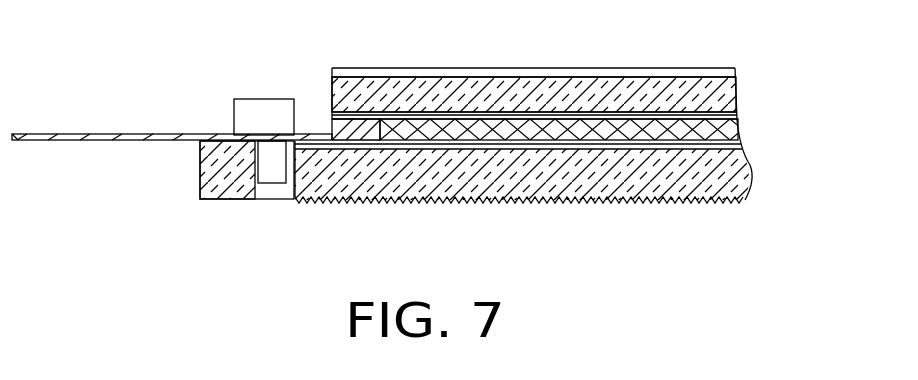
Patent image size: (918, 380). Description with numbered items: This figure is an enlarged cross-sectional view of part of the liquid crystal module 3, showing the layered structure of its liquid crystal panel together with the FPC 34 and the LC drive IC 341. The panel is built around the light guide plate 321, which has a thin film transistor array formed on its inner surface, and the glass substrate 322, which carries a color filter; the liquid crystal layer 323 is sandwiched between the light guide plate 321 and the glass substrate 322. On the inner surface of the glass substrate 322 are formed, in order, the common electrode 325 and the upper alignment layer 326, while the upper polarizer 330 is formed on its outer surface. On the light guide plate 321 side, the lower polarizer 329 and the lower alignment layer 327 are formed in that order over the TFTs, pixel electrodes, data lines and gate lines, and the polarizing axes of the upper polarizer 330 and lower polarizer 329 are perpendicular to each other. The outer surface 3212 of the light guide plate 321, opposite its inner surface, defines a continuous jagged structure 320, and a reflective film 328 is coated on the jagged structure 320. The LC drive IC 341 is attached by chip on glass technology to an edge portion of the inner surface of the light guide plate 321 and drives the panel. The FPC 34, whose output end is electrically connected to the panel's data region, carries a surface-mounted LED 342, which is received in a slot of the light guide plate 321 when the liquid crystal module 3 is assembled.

The liquid crystal module 3 is at (161, 50).
The FPC 34 is at (62, 138).
The LC drive IC 341 is at (280, 113).
The LED 342 is at (272, 172).
The jagged structure 320 is at (588, 202).
The light guide plate 321 is at (640, 170).
The outer surface 3212 is at (478, 203).
The glass substrate 322 is at (730, 94).
The liquid crystal layer 323 is at (502, 133).
The common electrode 325 is at (733, 113).
The upper alignment layer 326 is at (733, 117).
The lower alignment layer 327 is at (733, 143).
The reflective film 328 is at (726, 202).
The lower polarizer 329 is at (736, 147).
The upper polarizer 330 is at (618, 75).